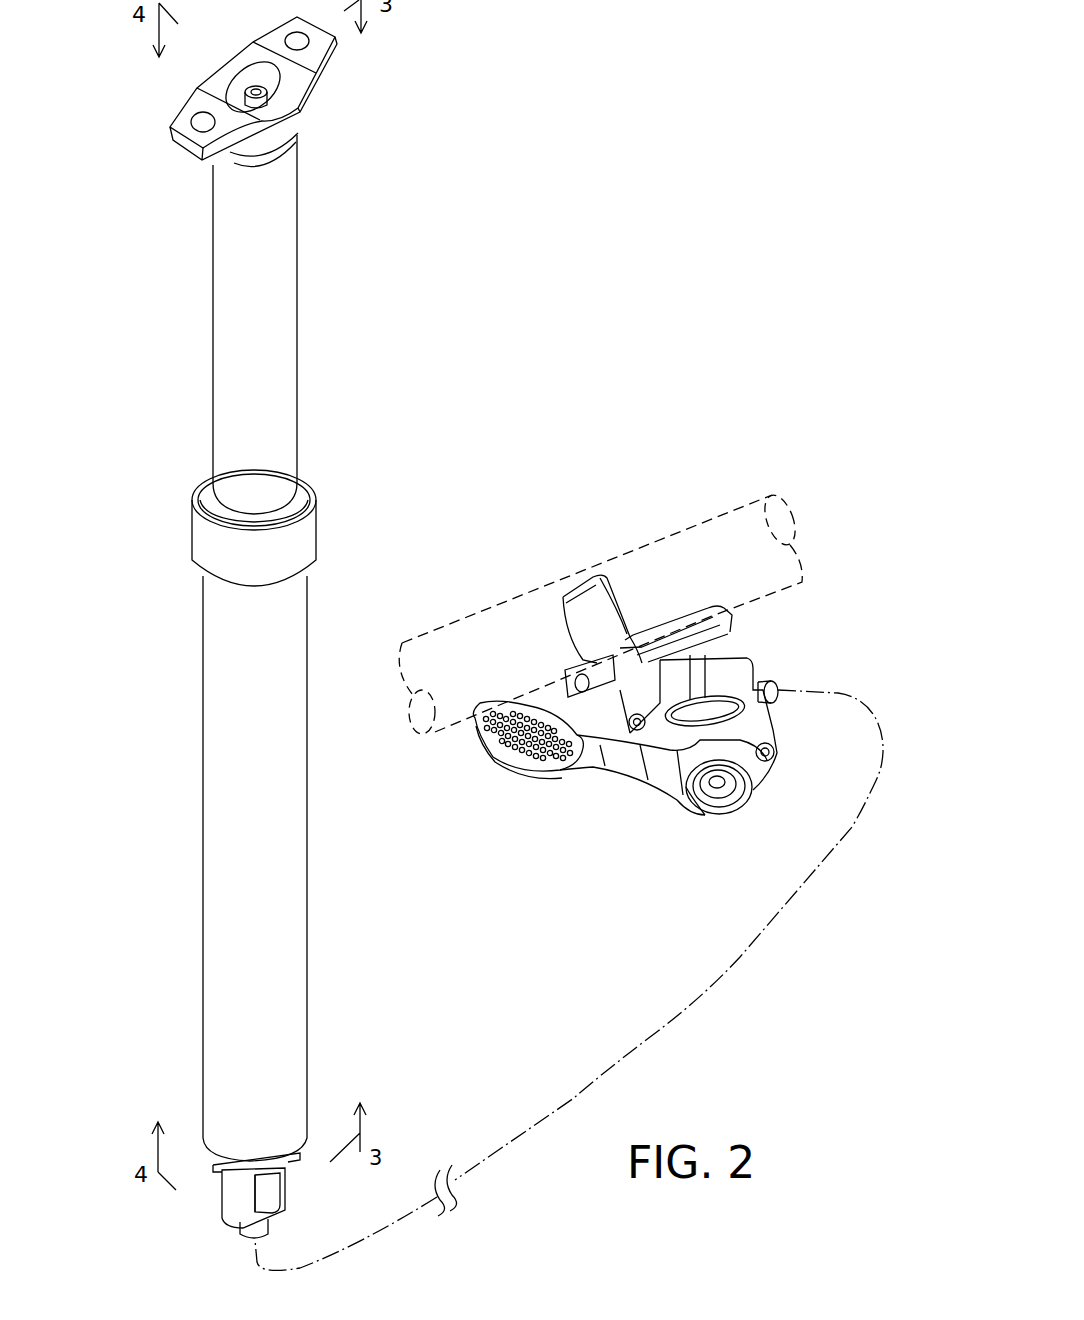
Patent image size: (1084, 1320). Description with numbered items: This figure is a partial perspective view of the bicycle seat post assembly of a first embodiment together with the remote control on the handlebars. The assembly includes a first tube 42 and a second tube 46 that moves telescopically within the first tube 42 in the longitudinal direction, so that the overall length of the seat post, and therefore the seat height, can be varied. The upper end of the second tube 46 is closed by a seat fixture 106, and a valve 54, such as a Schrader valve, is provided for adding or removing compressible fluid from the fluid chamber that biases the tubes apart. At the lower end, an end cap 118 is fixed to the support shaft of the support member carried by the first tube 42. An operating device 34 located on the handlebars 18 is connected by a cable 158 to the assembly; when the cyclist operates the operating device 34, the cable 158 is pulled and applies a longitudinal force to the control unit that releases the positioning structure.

The handlebars 18 is at (725, 513).
The operating device 34 is at (830, 638).
The first tube 42 is at (290, 868).
The second tube 46 is at (285, 228).
The valve 54 is at (260, 107).
The seat fixture 106 is at (332, 58).
The end cap 118 is at (283, 1200).
The cable 158 is at (720, 973).